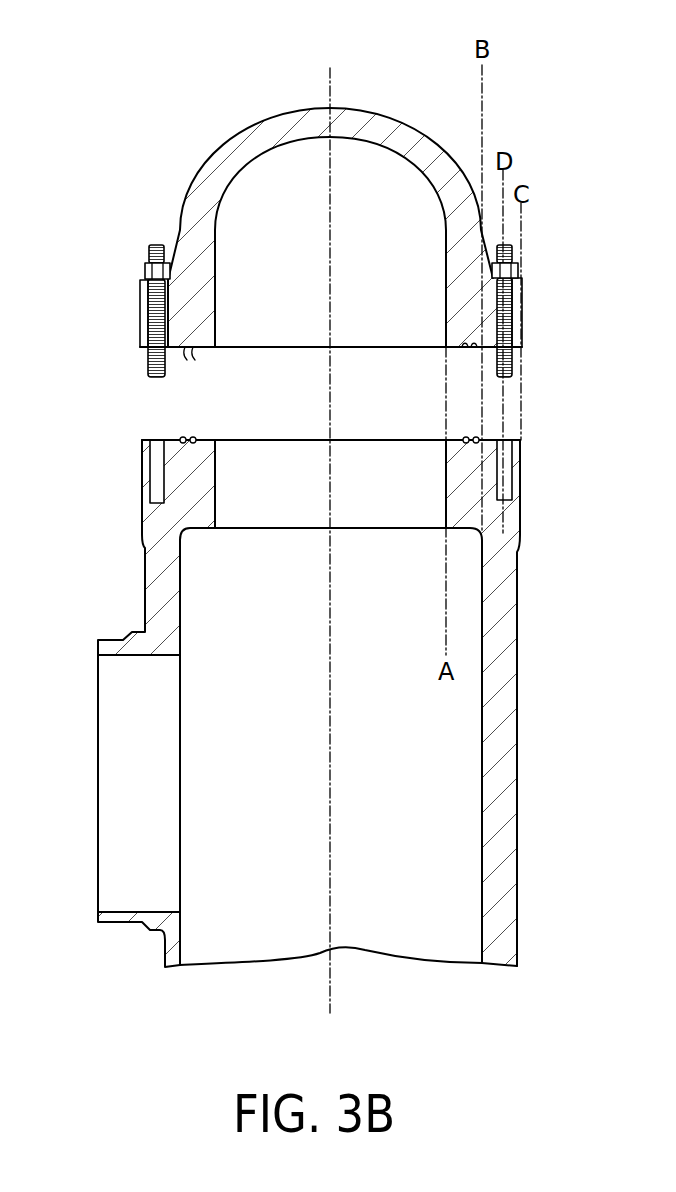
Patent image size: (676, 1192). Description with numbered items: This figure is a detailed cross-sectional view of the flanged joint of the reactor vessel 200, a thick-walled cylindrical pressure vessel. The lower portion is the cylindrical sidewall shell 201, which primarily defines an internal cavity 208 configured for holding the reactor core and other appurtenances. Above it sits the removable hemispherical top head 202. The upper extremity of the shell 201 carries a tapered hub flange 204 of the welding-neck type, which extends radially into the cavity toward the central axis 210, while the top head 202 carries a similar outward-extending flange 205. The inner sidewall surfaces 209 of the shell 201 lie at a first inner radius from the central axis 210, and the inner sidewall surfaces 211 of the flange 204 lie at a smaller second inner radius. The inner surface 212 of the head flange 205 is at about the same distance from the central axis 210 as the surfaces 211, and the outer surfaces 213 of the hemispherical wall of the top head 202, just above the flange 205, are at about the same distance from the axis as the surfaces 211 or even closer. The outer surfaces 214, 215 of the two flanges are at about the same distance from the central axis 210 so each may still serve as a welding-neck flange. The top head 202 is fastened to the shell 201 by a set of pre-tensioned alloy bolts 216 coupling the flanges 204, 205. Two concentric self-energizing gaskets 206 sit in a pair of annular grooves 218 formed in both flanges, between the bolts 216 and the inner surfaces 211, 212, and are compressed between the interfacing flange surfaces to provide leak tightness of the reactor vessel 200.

The reactor vessel 200 is at (128, 95).
The cylindrical sidewall shell 201 is at (517, 720).
The top head 202 is at (258, 108).
The tapered hub flange 204 is at (147, 505).
The head flange 205 is at (138, 283).
The self-energizing gaskets 206 is at (195, 437).
The internal cavity 208 is at (405, 622).
The inner sidewall surfaces 209 is at (185, 618).
The central axis 210 is at (331, 85).
The inner sidewall surfaces of the flange 211 is at (222, 473).
The inner surface 212 is at (220, 330).
The outer surfaces 213 is at (180, 208).
The outer surface of the shell flange 214 is at (140, 464).
The outer surface of the head flange 215 is at (138, 312).
The alloy bolts 216 is at (155, 378).
The annular grooves 218 is at (188, 350).